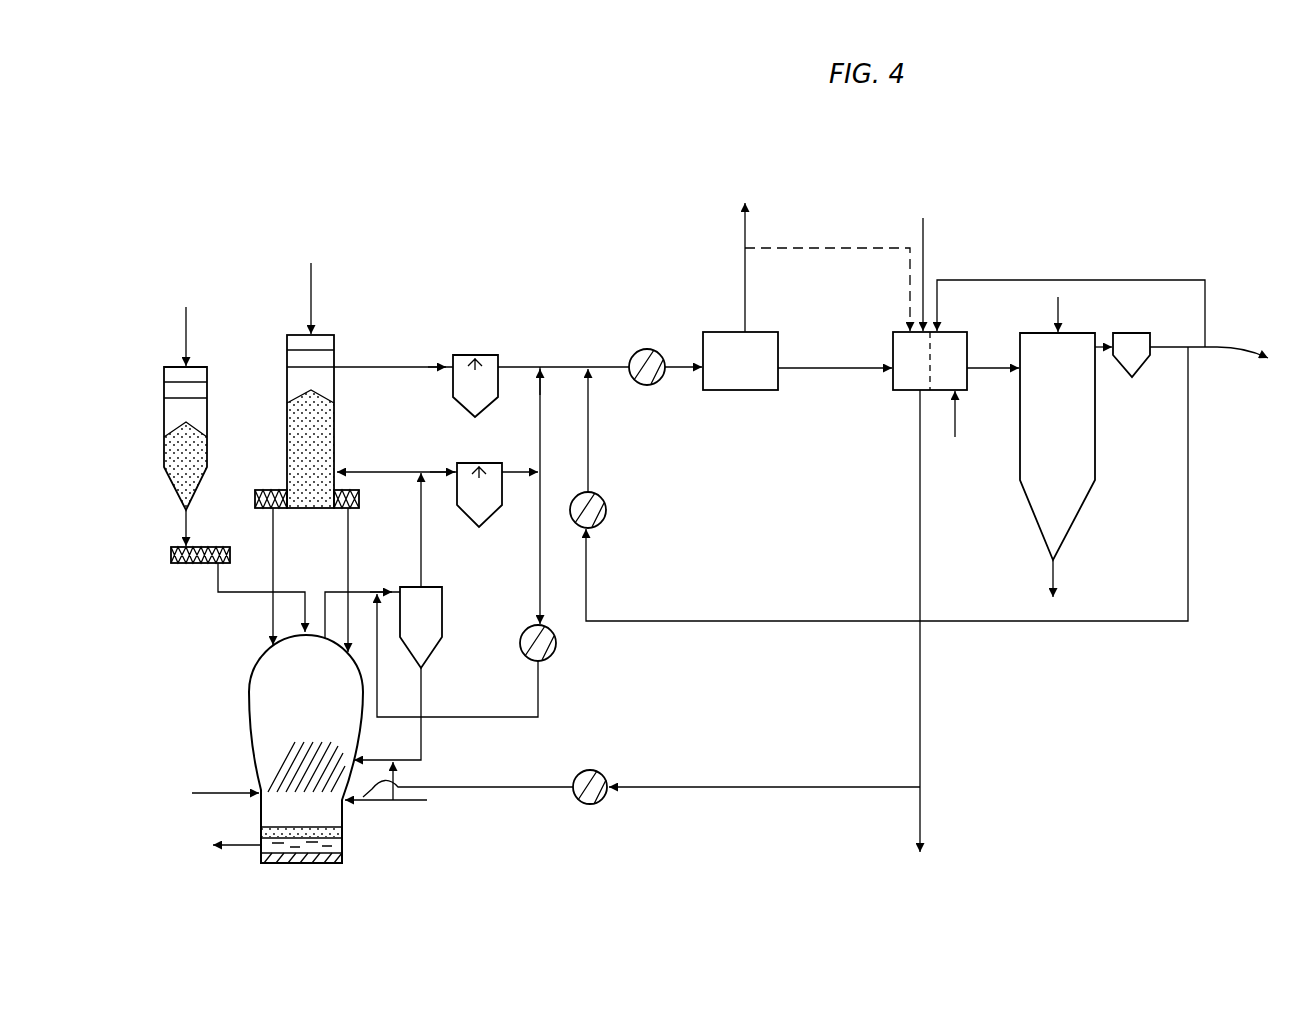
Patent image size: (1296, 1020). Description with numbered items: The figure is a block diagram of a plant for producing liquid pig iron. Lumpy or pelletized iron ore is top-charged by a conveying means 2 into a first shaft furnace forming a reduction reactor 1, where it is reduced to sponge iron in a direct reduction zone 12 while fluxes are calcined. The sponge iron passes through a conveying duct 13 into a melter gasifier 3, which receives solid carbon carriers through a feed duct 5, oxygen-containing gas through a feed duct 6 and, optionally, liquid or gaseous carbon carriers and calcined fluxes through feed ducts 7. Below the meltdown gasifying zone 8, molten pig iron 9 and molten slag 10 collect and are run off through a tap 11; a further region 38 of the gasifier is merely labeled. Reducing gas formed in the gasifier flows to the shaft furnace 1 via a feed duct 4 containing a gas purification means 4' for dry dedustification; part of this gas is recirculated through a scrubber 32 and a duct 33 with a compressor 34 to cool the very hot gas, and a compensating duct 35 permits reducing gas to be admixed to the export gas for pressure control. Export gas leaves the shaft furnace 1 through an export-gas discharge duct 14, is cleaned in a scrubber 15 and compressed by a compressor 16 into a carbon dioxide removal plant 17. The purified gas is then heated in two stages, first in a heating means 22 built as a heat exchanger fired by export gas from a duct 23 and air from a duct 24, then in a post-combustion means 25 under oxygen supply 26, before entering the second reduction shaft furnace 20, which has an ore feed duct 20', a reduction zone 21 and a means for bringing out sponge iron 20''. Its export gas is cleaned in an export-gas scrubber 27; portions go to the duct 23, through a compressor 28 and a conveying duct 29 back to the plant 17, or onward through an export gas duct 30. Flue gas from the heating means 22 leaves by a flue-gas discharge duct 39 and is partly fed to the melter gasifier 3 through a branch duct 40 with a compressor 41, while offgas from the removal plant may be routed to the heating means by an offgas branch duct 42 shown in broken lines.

The reduction reactor 1 is at (341, 335).
The conveying means 2 is at (313, 293).
The melter gasifier 3 is at (247, 693).
The feed duct 4 is at (373, 555).
The gas purification means 4' is at (413, 673).
The feed duct for solid carbon carriers 5 is at (245, 592).
The feed duct for oxygen-containing gases 6 is at (405, 803).
The feed ducts for liquid or gaseous carbon carriers and calcined fluxes 7 is at (240, 790).
The meltdown gasifying zone 8 is at (307, 753).
The molten pig iron 9 is at (342, 852).
The molten slag 10 is at (277, 837).
The tap 11 is at (242, 847).
The direct reduction zone 12 is at (302, 432).
The conveying duct 13 is at (348, 543).
The export-gas discharge duct 14 is at (380, 367).
The scrubber 15 is at (470, 355).
The compressor 16 is at (642, 350).
The CO2 removal plant 17 is at (740, 361).
The second reduction shaft furnace 20 is at (1004, 491).
The ore feed duct 20' is at (1085, 307).
The means for bringing out sponge iron 20'' is at (1094, 558).
The reduction zone 21 is at (1057, 446).
The heating means 22 is at (918, 380).
The duct 23 is at (995, 280).
The duct 24 is at (923, 238).
The post-combustion means 25 is at (958, 347).
The oxygen supply 26 is at (955, 437).
The export-gas scrubber 27 is at (1128, 355).
The compressor 28 is at (605, 498).
The conveying duct 29 is at (721, 621).
The export gas duct 30 is at (1217, 347).
The scrubber 32 is at (475, 512).
The duct 33 is at (540, 595).
The compressor 34 is at (550, 660).
The compensating duct 35 is at (540, 432).
The fluidized bed zone 38 is at (287, 770).
The flue-gas discharge duct 39 is at (920, 684).
The branch duct 40 is at (686, 787).
The compressor 41 is at (595, 779).
The offgas branch duct 42 is at (833, 242).